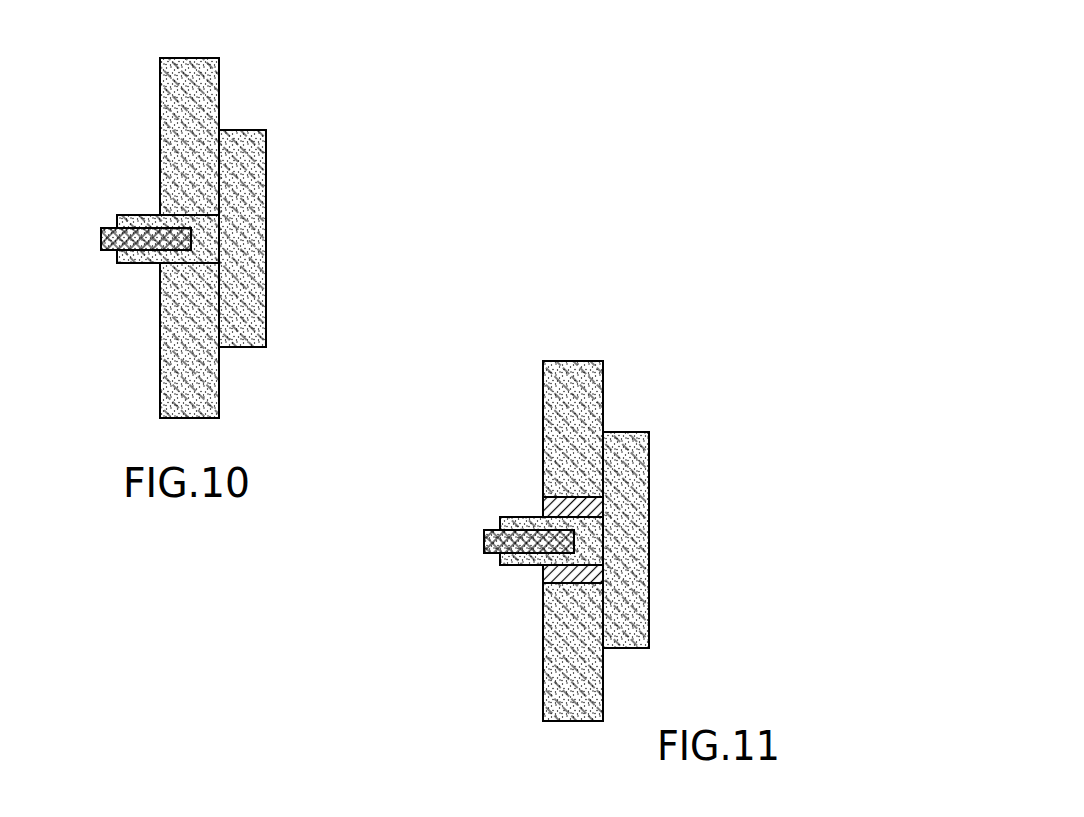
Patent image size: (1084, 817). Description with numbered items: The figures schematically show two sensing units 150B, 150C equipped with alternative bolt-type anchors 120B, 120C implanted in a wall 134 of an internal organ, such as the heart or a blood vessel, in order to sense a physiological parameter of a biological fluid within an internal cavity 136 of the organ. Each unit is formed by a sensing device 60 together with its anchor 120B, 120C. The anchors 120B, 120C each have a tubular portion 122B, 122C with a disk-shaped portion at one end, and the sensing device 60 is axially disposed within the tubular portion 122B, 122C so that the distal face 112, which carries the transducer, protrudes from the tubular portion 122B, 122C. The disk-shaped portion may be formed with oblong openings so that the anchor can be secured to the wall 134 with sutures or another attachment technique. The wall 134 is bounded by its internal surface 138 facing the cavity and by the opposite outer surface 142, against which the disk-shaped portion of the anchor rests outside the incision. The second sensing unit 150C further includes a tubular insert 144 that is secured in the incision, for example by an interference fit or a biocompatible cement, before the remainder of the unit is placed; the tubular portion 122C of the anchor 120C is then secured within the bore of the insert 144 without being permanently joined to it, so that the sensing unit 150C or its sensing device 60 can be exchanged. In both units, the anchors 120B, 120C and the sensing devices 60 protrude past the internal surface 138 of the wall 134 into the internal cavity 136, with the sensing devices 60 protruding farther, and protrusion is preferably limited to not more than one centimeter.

In FIG. 10, the wall 134 is at (219, 62).
In FIG. 11, the wall 134 is at (603, 377).
In FIG. 10, the internal cavity 136 is at (192, 216).
In FIG. 11, the internal cavity 136 is at (593, 527).
In FIG. 10, the internal surface 138 is at (160, 107).
In FIG. 11, the internal surface 138 is at (543, 398).
In FIG. 10, the second surface of strip 142 is at (219, 105).
In FIG. 11, the second surface of strip 142 is at (603, 416).
In FIG. 11, the tubular insert 144 is at (545, 502).
In FIG. 10, the anchor 120B is at (266, 180).
In FIG. 11, the anchor 120C is at (649, 498).
In FIG. 10, the sensing unit 150B is at (215, 216).
In FIG. 11, the sensing unit 150C is at (599, 527).
In FIG. 10, the sensing device 60 is at (101, 232).
In FIG. 11, the sensing device 60 is at (484, 532).
In FIG. 10, the distal face 112 is at (101, 238).
In FIG. 11, the distal face 112 is at (484, 545).
In FIG. 10, the tubular portion 122B is at (143, 263).
In FIG. 11, the tubular portion 122C is at (523, 566).